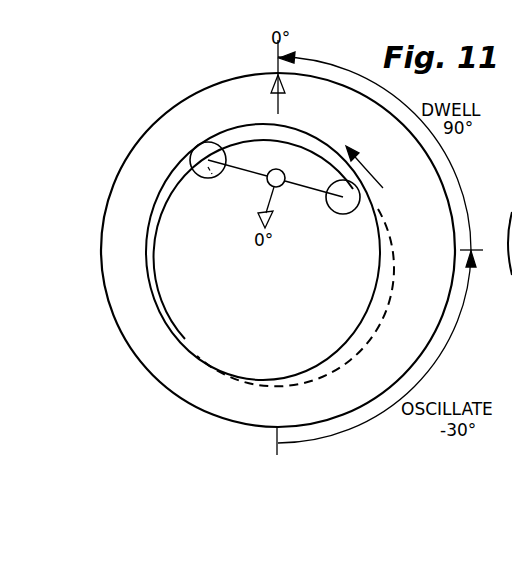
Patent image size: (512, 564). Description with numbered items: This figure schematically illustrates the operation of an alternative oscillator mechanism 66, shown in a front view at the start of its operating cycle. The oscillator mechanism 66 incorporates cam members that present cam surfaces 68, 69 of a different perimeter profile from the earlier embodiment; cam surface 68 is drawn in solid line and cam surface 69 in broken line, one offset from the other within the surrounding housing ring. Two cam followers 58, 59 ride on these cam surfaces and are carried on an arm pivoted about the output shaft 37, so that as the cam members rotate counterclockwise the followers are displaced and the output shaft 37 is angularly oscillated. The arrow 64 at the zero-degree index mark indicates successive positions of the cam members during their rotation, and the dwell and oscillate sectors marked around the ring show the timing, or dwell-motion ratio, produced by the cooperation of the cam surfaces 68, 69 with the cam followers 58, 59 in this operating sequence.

The output shaft 37 is at (283, 173).
The cam follower 58 is at (207, 178).
The cam follower 59 is at (342, 212).
The arrow 64 is at (281, 97).
The oscillator mechanism 66 is at (146, 122).
The cam surface 68 is at (147, 240).
The cam surface 69 is at (394, 284).